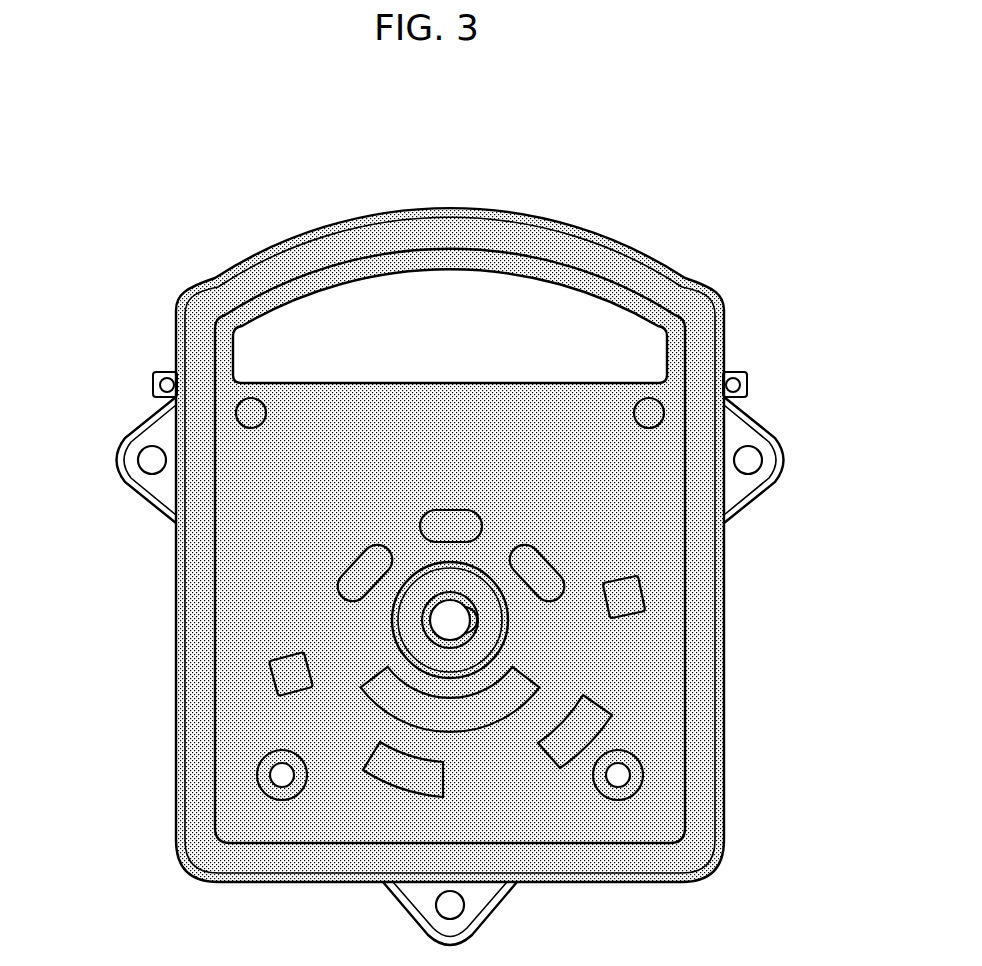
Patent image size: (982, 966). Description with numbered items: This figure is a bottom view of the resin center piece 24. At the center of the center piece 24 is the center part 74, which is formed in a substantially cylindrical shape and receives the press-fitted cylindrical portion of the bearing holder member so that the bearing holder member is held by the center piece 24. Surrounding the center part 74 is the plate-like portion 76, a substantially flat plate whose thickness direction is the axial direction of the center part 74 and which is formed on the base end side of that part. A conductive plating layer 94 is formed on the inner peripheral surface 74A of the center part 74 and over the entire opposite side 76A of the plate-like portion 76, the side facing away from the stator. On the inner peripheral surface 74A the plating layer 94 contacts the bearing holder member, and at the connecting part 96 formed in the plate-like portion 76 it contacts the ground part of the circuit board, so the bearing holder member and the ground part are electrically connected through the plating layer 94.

The center piece 24 is at (433, 186).
The plate-like portion 76 is at (177, 633).
The opposite side 76A is at (235, 552).
The plating layer 94 is at (667, 557).
The center part 74 is at (473, 655).
The inner peripheral surface 74A is at (465, 630).
The connecting part 96 is at (643, 775).